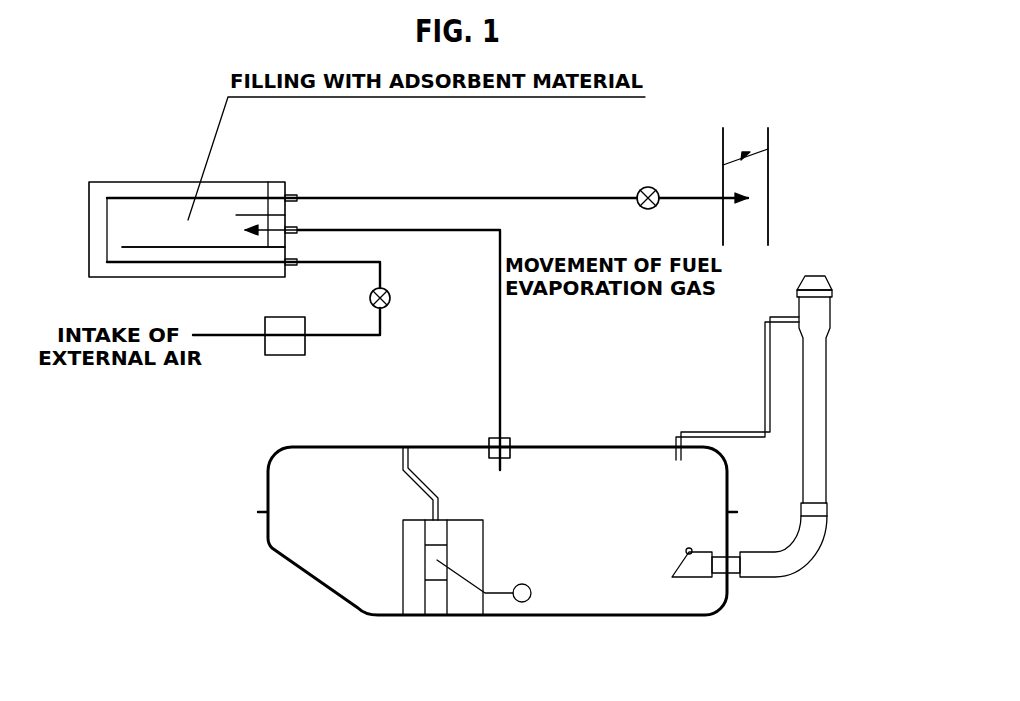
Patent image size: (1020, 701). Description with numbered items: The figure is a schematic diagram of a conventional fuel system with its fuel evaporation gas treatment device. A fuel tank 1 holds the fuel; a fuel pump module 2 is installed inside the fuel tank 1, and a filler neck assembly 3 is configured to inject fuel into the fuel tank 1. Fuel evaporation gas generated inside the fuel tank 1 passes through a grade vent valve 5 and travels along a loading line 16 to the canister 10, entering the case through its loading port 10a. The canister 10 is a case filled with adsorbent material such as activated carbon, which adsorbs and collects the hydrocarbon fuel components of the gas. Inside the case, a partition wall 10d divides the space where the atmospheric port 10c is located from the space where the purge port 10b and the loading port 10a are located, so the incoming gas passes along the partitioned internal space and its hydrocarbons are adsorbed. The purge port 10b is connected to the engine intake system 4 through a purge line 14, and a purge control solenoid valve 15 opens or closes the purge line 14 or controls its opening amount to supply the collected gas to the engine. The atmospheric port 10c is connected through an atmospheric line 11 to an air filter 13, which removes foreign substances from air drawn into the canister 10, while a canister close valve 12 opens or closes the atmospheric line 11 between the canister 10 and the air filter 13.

The fuel tank 1 is at (560, 445).
The fuel pump module 2 is at (483, 540).
The filler neck assembly 3 is at (826, 470).
The engine intake system 4 is at (722, 168).
The grade vent valve 5 is at (505, 437).
The canister 10 is at (183, 182).
The loading port 10a is at (292, 224).
The purge port 10b is at (292, 192).
The atmospheric port 10c is at (297, 268).
The partition wall 10d is at (135, 247).
The atmospheric line 11 is at (362, 337).
The canister close valve 12 is at (392, 298).
The air filter 13 is at (285, 355).
The purge line 14 is at (470, 197).
The purge control solenoid valve 15 is at (648, 187).
The loading line 16 is at (500, 336).